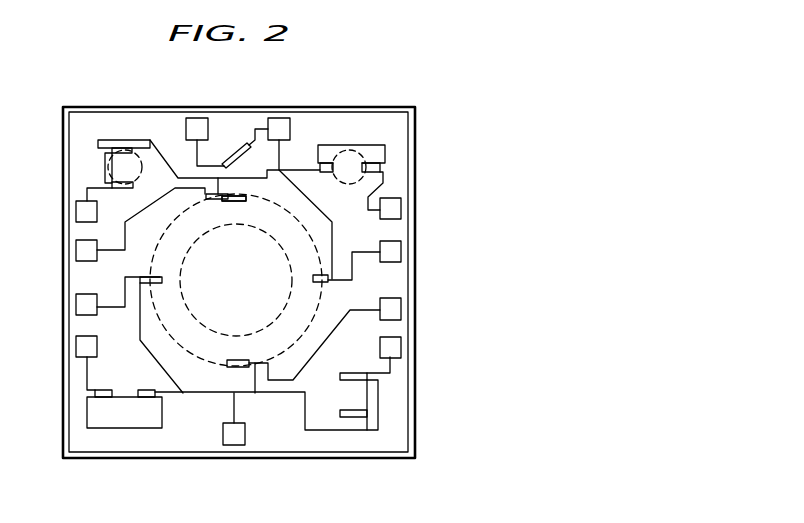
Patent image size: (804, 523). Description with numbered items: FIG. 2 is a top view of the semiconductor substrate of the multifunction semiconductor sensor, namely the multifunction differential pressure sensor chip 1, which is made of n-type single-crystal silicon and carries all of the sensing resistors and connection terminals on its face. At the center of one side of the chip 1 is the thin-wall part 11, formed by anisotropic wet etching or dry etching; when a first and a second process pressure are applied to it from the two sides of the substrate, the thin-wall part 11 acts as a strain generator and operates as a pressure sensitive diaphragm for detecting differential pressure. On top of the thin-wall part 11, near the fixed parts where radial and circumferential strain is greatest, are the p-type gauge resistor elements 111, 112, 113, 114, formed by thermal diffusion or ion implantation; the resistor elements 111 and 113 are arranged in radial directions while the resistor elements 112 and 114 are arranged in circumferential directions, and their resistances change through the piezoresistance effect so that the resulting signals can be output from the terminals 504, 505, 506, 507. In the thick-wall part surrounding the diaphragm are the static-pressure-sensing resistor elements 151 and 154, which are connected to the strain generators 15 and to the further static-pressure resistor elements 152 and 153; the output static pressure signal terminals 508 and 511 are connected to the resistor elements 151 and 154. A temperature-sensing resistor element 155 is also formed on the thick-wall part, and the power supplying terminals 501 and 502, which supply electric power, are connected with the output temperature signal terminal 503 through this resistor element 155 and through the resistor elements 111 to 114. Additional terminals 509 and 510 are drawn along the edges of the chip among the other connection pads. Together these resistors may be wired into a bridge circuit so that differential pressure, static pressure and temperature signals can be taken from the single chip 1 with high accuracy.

The multifunction differential pressure sensor chip 1 is at (419, 117).
The thin-wall part 11 is at (177, 328).
The strain generators 15 is at (108, 165).
The resistor element 111 is at (313, 278).
The resistor element 112 is at (238, 360).
The resistor element 113 is at (158, 284).
The resistor element 114 is at (232, 201).
The resistor element 151 is at (378, 158).
The resistor element 152 is at (352, 428).
The resistor element 153 is at (103, 398).
The resistor element 154 is at (114, 140).
The resistor element 155 is at (232, 152).
The power supplying terminal 501 is at (283, 118).
The power supplying terminal 502 is at (232, 445).
The output temperature signal terminal 503 is at (186, 128).
The terminal 504 is at (396, 256).
The terminal 505 is at (396, 314).
The terminal 506 is at (76, 250).
The terminal 507 is at (76, 305).
The output static pressure signal terminal 508 is at (396, 210).
The terminal pad 509 is at (396, 352).
The terminal pad 510 is at (76, 212).
The output static pressure signal terminal 511 is at (76, 350).